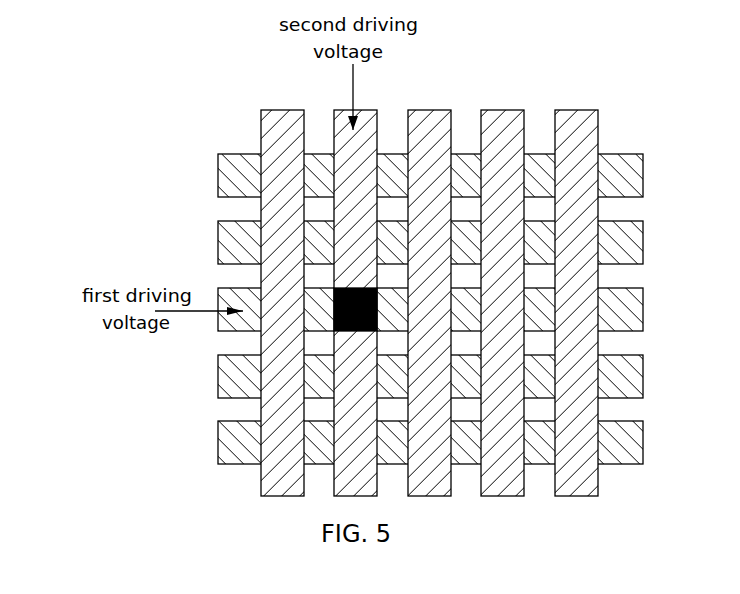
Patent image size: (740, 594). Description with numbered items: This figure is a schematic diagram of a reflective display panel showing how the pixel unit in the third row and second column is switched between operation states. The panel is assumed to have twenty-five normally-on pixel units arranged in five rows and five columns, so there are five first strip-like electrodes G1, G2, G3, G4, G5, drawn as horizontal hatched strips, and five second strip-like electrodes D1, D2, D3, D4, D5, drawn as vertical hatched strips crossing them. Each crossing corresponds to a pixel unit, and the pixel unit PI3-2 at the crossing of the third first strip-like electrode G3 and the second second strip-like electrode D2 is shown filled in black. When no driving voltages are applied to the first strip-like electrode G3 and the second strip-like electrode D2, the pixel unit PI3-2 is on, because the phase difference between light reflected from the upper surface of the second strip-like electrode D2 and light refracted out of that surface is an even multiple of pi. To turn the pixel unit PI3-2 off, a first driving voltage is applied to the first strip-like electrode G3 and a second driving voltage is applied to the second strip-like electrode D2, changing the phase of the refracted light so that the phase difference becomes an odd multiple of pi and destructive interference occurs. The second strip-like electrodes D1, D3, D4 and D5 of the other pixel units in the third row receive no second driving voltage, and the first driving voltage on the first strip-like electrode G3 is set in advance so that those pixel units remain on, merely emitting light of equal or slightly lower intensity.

The second strip-like electrode D1 is at (265, 110).
The second strip-like electrode D2 is at (338, 110).
The second strip-like electrode D3 is at (412, 110).
The second strip-like electrode D4 is at (485, 110).
The second strip-like electrode D5 is at (559, 110).
The first strip-like electrode G1 is at (218, 164).
The first strip-like electrode G2 is at (218, 231).
The first strip-like electrode G3 is at (218, 298).
The first strip-like electrode G4 is at (218, 365).
The first strip-like electrode G5 is at (218, 431).
The pixel unit PI3-2 is at (329, 328).